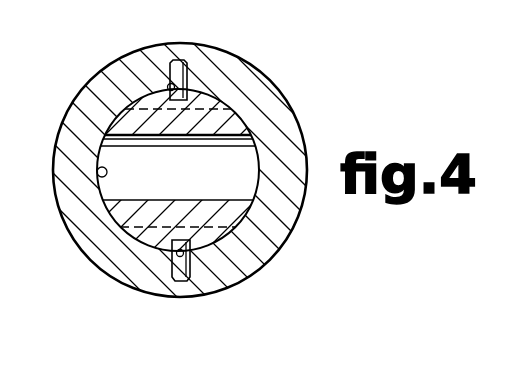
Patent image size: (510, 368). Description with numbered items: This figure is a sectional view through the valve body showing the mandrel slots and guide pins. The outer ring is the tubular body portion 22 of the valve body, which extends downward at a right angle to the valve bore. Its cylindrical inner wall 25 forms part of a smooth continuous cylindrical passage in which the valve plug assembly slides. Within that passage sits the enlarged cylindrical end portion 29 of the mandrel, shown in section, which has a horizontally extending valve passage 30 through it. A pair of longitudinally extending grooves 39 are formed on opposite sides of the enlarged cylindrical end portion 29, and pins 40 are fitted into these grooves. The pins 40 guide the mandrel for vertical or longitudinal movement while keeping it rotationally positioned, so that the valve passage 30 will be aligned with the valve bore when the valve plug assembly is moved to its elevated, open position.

The tubular body portion 22 is at (98, 253).
The cylindrical inner wall 25 is at (97, 181).
The enlarged cylindrical end portion 29 is at (127, 132).
The valve passage 30 is at (177, 136).
The longitudinally extending grooves 39 is at (168, 87).
The pins 40 is at (188, 72).